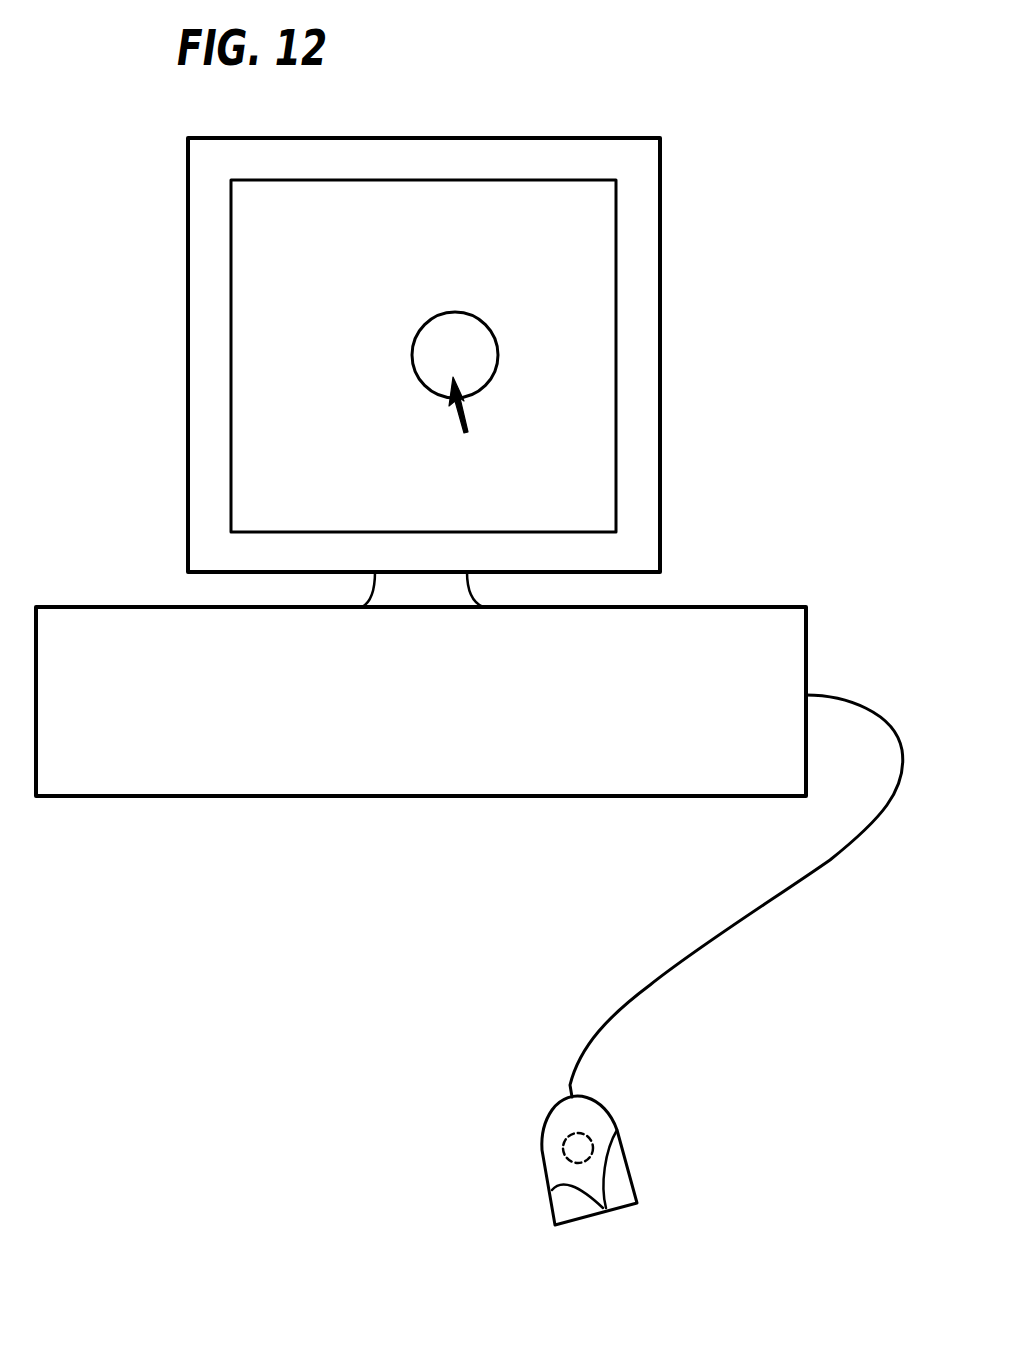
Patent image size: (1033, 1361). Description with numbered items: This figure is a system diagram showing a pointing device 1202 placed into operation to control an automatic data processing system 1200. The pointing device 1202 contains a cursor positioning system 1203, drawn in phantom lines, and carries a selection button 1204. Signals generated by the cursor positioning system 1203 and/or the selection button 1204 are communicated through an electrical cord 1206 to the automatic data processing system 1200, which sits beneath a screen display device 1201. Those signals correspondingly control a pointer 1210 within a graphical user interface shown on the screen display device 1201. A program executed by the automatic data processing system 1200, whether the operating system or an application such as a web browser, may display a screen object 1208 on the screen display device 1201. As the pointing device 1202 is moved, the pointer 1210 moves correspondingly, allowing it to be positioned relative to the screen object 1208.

The automatic data processing system 1200 is at (698, 607).
The screen display device 1201 is at (660, 309).
The pointing device 1202 is at (607, 1113).
The cursor positioning system 1203 is at (562, 1150).
The selection button 1204 is at (620, 1177).
The electrical cord 1206 is at (785, 887).
The screen object 1208 is at (478, 312).
The pointer 1210 is at (462, 394).